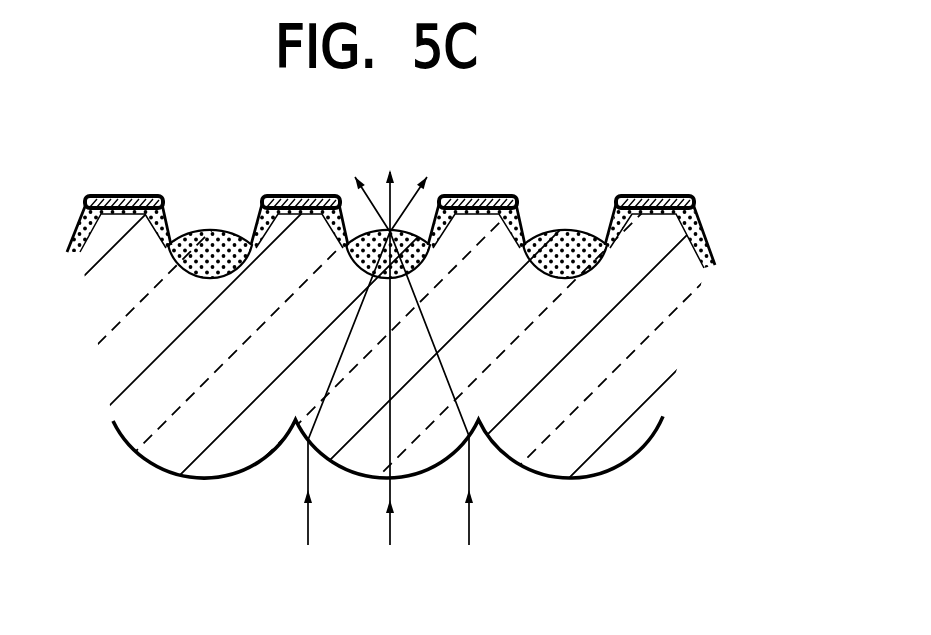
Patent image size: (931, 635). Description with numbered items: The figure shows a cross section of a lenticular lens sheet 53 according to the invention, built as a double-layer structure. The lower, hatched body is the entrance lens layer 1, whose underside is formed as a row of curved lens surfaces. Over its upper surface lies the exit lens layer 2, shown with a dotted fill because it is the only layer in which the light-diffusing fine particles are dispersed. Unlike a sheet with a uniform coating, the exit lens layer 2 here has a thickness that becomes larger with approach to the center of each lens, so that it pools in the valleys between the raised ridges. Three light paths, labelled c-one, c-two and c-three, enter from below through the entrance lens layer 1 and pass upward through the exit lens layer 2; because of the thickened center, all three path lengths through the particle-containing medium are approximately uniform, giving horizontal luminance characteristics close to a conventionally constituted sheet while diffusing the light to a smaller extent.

The entrance lens layer 1 is at (72, 273).
The exit lens layer 2 is at (70, 236).
The lenticular lens sheet 53 is at (428, 360).